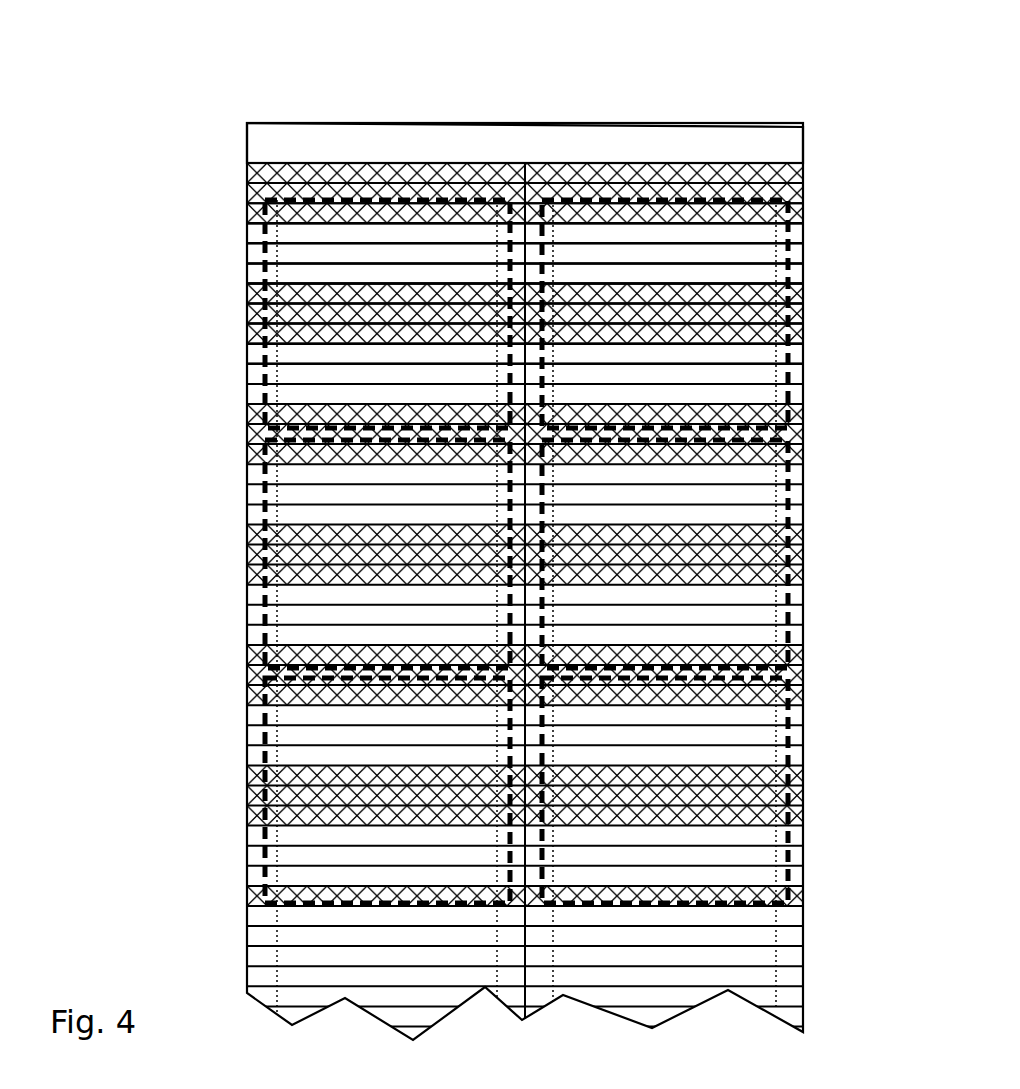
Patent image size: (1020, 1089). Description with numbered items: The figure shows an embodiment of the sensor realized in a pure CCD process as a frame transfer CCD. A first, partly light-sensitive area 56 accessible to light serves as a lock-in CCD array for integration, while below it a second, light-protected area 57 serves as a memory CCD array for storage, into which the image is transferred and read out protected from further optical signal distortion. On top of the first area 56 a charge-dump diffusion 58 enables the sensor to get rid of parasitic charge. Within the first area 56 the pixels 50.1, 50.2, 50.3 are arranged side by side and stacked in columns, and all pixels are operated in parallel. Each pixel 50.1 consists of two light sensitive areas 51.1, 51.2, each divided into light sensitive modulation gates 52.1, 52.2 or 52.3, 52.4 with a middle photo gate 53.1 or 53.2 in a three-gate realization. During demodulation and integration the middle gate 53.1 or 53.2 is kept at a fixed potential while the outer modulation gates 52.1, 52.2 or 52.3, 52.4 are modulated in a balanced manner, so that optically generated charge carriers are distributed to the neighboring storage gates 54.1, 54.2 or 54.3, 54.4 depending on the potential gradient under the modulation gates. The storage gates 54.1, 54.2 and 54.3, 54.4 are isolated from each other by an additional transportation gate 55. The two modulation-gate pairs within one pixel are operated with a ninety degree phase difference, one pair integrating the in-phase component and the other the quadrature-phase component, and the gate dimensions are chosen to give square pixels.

The charge-dump diffusion 58 is at (255, 138).
The pixel 50.1 is at (318, 186).
The pixel 50.2 is at (727, 190).
The pixel 50.3 is at (255, 618).
The light sensitive area 51.1 is at (807, 230).
The light sensitive area 51.2 is at (807, 347).
The modulation gate 52.1 is at (250, 236).
The modulation gate 52.2 is at (250, 273).
The modulation gate 52.3 is at (250, 353).
The modulation gate 52.4 is at (250, 395).
The middle photo gate 53.1 is at (250, 253).
The middle photo gate 53.2 is at (250, 373).
The storage gate 54.1 is at (248, 212).
The storage gate 54.2 is at (250, 293).
The storage gate 54.3 is at (250, 337).
The storage gate 54.4 is at (250, 415).
The transportation gate 55 is at (250, 315).
The first area 56 is at (835, 163).
The second area 57 is at (835, 916).